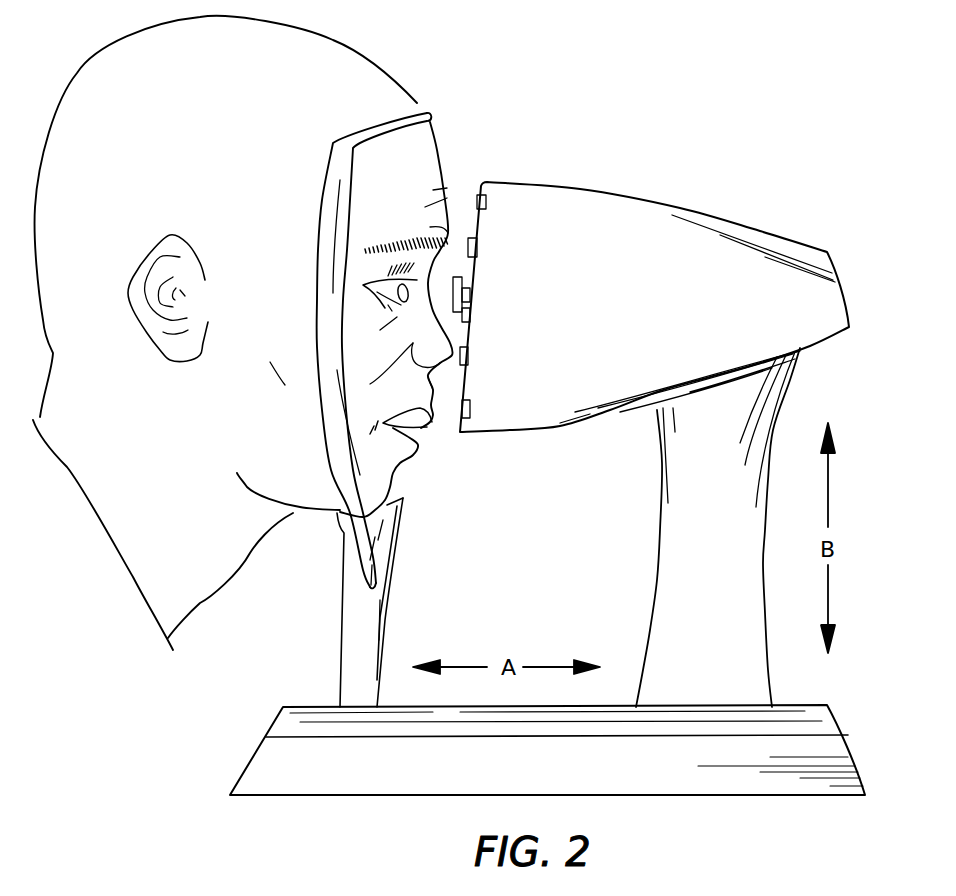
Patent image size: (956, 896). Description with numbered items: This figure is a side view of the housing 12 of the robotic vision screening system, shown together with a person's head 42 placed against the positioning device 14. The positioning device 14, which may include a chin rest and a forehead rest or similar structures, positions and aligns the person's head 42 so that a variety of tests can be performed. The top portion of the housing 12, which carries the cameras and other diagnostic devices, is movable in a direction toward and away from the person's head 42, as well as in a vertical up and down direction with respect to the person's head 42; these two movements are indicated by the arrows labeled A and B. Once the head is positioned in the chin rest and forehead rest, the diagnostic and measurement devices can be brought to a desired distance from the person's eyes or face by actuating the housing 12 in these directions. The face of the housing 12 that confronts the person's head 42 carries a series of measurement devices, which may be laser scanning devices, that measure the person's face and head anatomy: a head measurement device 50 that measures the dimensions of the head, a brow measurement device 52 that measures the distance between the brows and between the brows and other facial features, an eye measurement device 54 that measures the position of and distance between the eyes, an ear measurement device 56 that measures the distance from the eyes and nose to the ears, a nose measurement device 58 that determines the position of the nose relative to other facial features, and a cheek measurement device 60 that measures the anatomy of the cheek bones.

The housing 12 is at (788, 327).
The positioning device 14 is at (353, 618).
The person's head 42 is at (337, 73).
The head measurement device 50 is at (479, 200).
The brow measurement device 52 is at (477, 247).
The eye measurement device 54 is at (470, 295).
The ear measurement device 56 is at (470, 315).
The nose measurement device 58 is at (468, 356).
The cheek measurement device 60 is at (470, 410).